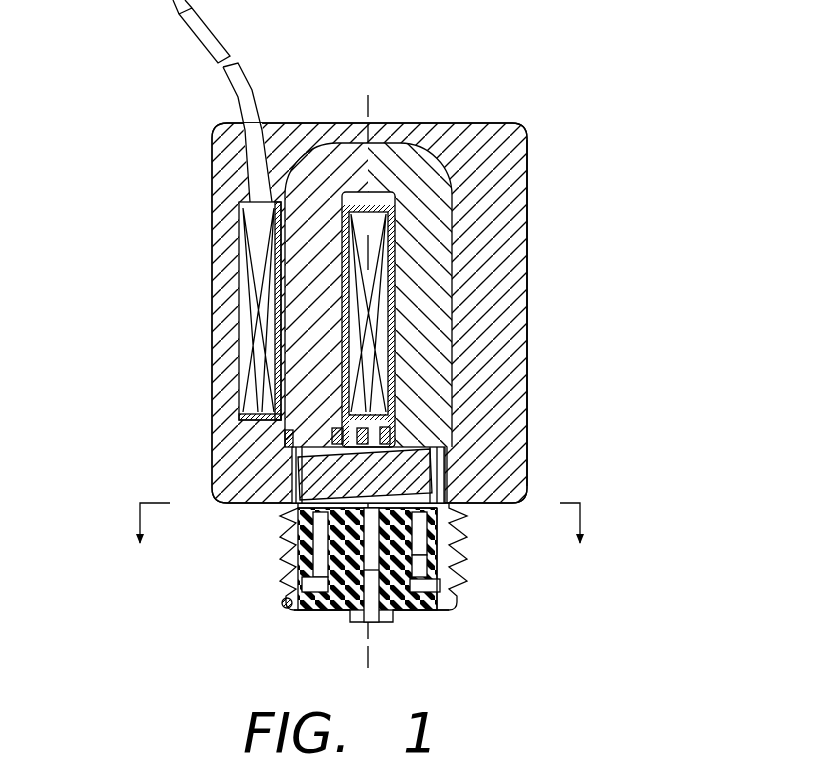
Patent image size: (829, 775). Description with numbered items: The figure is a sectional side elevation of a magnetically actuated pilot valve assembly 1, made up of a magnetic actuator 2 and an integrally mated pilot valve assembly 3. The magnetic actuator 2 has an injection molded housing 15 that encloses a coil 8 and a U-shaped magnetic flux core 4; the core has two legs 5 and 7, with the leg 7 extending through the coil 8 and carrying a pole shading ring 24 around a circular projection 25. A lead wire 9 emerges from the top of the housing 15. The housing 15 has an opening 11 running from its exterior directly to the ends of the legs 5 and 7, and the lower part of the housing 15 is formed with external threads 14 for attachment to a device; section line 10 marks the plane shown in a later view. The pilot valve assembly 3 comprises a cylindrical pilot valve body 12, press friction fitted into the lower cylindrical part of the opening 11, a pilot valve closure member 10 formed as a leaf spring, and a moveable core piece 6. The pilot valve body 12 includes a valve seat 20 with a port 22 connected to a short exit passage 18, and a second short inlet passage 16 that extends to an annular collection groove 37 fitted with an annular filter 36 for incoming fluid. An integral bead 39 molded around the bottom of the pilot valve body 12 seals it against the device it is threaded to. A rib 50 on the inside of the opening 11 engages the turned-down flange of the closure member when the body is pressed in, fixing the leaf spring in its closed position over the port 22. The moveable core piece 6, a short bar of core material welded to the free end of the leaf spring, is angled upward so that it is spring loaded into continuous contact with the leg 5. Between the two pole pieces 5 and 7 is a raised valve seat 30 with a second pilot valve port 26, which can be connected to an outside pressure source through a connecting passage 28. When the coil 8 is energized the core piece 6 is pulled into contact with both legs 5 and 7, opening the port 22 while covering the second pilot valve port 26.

The magnetically actuated pilot valve assembly 1 is at (543, 252).
The magnetic actuator 2 is at (533, 160).
The pilot valve assembly 3 is at (425, 609).
The magnetic flux core 4 is at (505, 300).
The leg 5 is at (500, 343).
The moveable core piece 6 is at (400, 462).
The leg 7 is at (305, 272).
The coil 8 is at (240, 230).
The lead wire 9 is at (218, 50).
The pilot valve closure member 10 is at (670, 487).
The opening 11 is at (300, 455).
The pilot valve body 12 is at (455, 580).
The external threads 14 is at (462, 583).
The housing 15 is at (508, 213).
The inlet passage 16 is at (280, 540).
The exit passage 18 is at (285, 578).
The valve seat 20 is at (462, 538).
The port 22 is at (465, 548).
The pole shading ring 24 is at (298, 436).
The circular projection 25 is at (345, 432).
The second pilot valve port 26 is at (330, 425).
The connecting passage 28 is at (440, 428).
The raised valve seat 30 is at (432, 440).
The annular filter 36 is at (288, 608).
The annular collection groove 37 is at (318, 607).
The integral bead 39 is at (282, 606).
The rib 50 is at (446, 448).